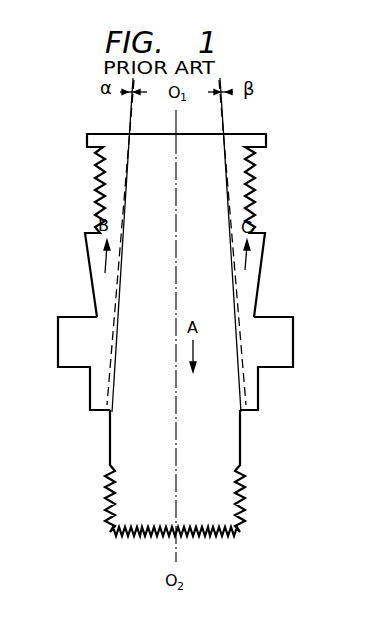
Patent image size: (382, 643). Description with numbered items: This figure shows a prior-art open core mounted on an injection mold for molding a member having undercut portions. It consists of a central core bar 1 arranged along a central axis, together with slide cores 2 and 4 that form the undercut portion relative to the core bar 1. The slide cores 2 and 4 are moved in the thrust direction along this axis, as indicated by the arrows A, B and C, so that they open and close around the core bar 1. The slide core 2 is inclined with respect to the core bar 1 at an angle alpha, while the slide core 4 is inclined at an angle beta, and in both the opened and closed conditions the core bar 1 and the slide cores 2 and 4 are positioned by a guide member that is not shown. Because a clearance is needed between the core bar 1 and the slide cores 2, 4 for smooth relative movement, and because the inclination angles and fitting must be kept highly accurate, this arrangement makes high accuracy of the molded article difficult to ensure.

The core bar 1 is at (128, 429).
The slide core 2 is at (64, 352).
The slide core 4 is at (248, 292).